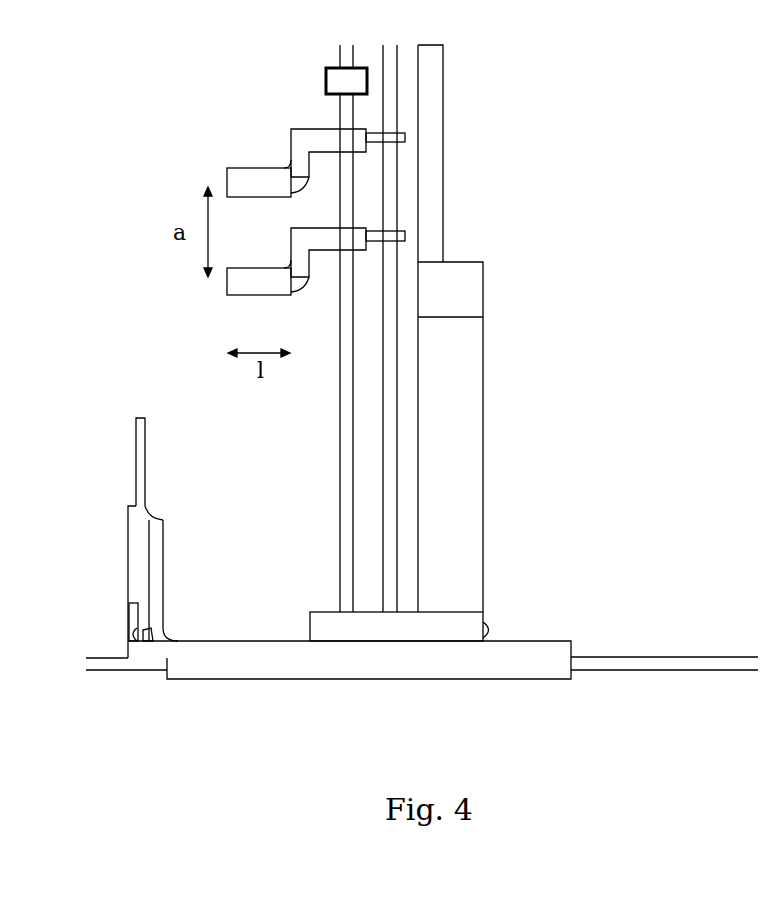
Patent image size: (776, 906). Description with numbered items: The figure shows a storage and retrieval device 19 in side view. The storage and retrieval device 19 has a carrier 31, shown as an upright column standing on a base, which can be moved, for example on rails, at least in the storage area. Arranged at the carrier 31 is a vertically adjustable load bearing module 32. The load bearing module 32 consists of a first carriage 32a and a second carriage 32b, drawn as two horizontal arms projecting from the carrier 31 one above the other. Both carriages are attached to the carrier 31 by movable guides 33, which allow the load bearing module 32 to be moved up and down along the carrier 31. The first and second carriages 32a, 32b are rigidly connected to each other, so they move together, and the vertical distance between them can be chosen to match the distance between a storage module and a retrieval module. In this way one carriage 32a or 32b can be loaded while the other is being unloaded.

The storage and retrieval device 19 is at (592, 155).
The carrier 31 is at (373, 373).
The load bearing module 32 is at (223, 190).
The first carriage 32a is at (240, 180).
The second carriage 32b is at (257, 285).
The movable guides 33 is at (322, 237).